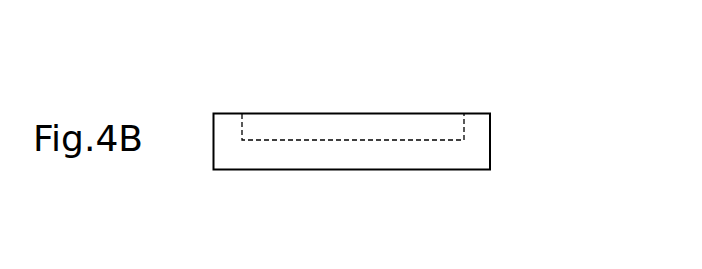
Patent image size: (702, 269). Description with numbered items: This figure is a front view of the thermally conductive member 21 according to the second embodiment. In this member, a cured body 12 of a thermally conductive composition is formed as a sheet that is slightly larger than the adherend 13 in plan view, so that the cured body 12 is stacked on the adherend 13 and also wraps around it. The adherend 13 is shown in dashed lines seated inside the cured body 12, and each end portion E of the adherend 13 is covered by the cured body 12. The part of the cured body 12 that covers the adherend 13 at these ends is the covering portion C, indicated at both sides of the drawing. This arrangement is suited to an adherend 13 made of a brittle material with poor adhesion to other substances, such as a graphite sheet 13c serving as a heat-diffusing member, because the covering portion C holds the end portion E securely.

The cured body 12 is at (371, 223).
The graphite sheet 13c is at (346, 113).
The adherend 13 is at (353, 85).
The thermally conductive member 21 is at (460, 85).
The covering portion C is at (242, 141).
The end portion E is at (240, 120).